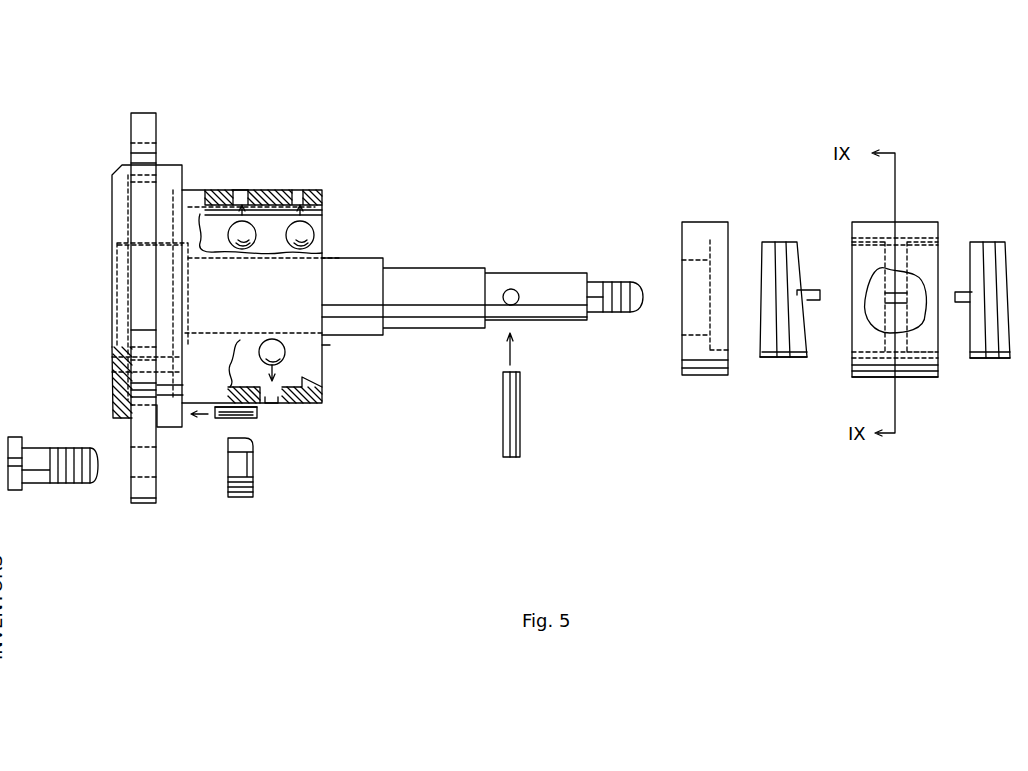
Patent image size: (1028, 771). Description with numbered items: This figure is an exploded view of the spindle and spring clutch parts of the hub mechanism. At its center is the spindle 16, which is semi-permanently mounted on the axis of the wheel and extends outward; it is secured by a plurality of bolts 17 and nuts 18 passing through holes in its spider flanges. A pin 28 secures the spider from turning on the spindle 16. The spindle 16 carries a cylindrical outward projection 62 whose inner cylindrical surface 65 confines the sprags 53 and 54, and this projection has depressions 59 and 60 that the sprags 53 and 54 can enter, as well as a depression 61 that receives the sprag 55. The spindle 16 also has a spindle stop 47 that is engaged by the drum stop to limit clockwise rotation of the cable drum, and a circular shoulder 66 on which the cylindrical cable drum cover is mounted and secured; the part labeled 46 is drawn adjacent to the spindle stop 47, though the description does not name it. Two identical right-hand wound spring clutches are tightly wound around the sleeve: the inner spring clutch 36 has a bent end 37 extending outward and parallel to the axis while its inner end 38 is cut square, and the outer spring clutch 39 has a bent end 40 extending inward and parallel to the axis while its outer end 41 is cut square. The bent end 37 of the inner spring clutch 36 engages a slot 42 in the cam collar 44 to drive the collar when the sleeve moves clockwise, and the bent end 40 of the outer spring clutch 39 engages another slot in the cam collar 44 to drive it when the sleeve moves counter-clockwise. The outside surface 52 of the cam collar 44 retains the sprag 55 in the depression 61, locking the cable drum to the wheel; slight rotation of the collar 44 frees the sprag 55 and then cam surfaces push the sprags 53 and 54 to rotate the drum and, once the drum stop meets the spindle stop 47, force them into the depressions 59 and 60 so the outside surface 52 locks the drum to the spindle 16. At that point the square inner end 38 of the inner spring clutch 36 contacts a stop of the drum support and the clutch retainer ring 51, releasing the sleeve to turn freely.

The spindle 16 is at (155, 121).
The bolt 17 is at (40, 482).
The nut 18 is at (250, 495).
The pin 28 is at (520, 422).
The inner spring clutch 36 is at (777, 242).
The bent end 37 is at (810, 303).
The inner end 38 is at (765, 357).
The outer spring clutch 39 is at (993, 242).
The bent end 40 is at (958, 303).
The outer end 41 is at (1005, 357).
The slot 42 is at (902, 293).
The cam collar 44 is at (905, 377).
The key bar 46 is at (253, 418).
The spindle stop 47 is at (362, 564).
The clutch retainer ring 51 is at (693, 222).
The outside surface 52 is at (877, 230).
The sprag 53 is at (238, 222).
The sprag 54 is at (322, 223).
The sprag 55 is at (286, 355).
The depression 59 is at (240, 190).
The depression 60 is at (300, 188).
The depression 61 is at (278, 403).
The cylindrical outward projection 62 is at (322, 345).
The inner cylindrical surface 65 is at (322, 388).
The circular shoulder 66 is at (168, 427).